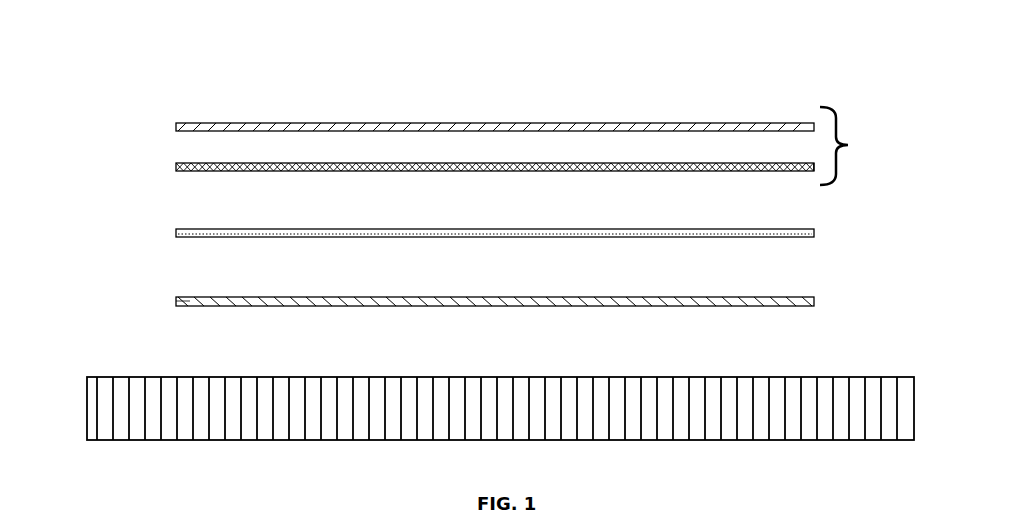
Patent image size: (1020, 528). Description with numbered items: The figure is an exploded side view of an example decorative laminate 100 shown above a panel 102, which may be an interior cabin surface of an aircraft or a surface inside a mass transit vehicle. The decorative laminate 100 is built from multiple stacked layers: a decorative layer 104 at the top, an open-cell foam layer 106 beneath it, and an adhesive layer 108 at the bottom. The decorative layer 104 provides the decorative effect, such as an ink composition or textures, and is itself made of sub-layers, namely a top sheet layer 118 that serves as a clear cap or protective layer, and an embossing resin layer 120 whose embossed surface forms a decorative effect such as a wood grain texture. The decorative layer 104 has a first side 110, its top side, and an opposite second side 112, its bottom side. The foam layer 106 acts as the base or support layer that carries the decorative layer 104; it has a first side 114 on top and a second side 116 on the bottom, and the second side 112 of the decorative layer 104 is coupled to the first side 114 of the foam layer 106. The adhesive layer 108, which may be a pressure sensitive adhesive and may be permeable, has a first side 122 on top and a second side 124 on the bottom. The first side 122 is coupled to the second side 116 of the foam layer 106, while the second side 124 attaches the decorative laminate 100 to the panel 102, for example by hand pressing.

The decorative laminate 100 is at (112, 63).
The panel 102 is at (106, 392).
The decorative layer 104 is at (848, 145).
The open-cell foam layer 106 is at (814, 234).
The adhesive layer 108 is at (814, 300).
The first side of decorative layer 110 is at (190, 123).
The second side of decorative layer 112 is at (187, 170).
The first side of foam layer 114 is at (178, 230).
The second side of foam layer 116 is at (178, 237).
The top sheet layer 118 is at (742, 127).
The embossing resin layer 120 is at (730, 166).
The first side of adhesive layer 122 is at (190, 297).
The second side of adhesive layer 124 is at (190, 306).